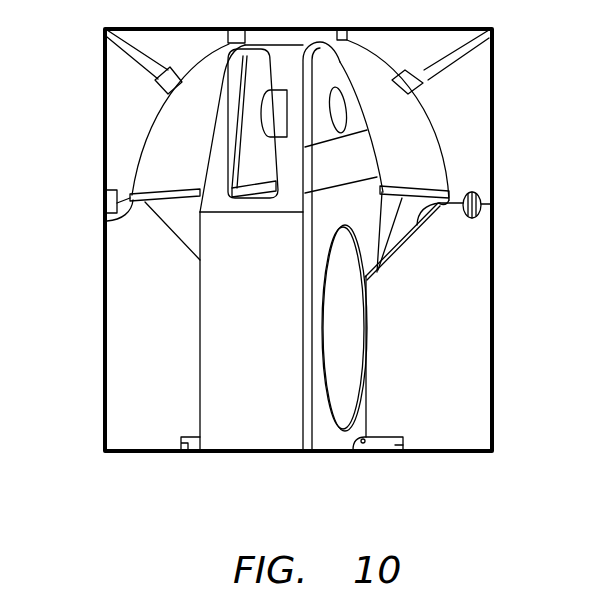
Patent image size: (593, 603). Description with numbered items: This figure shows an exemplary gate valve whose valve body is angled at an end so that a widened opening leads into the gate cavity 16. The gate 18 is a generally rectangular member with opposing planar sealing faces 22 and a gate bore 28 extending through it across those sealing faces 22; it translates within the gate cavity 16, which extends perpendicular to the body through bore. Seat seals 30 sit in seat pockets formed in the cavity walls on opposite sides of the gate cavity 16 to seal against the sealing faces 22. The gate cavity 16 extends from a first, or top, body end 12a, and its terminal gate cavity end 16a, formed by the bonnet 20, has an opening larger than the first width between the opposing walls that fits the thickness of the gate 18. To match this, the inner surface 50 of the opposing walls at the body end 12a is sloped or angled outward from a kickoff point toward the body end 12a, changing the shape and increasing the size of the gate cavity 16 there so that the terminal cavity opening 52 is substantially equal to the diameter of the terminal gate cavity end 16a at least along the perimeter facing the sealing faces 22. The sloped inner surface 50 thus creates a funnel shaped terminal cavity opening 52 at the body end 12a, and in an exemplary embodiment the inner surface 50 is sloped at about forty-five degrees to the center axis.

The terminal gate cavity end 16a is at (172, 125).
The body end 12a is at (106, 212).
The gate 18 is at (227, 205).
The gate cavity 16 is at (200, 388).
The bonnet 20 is at (477, 67).
The terminal cavity opening 52 is at (402, 176).
The inner surface 50 is at (432, 198).
The sealing face 22 is at (327, 228).
The gate bore 28 is at (340, 318).
The seat seal 30 is at (385, 436).